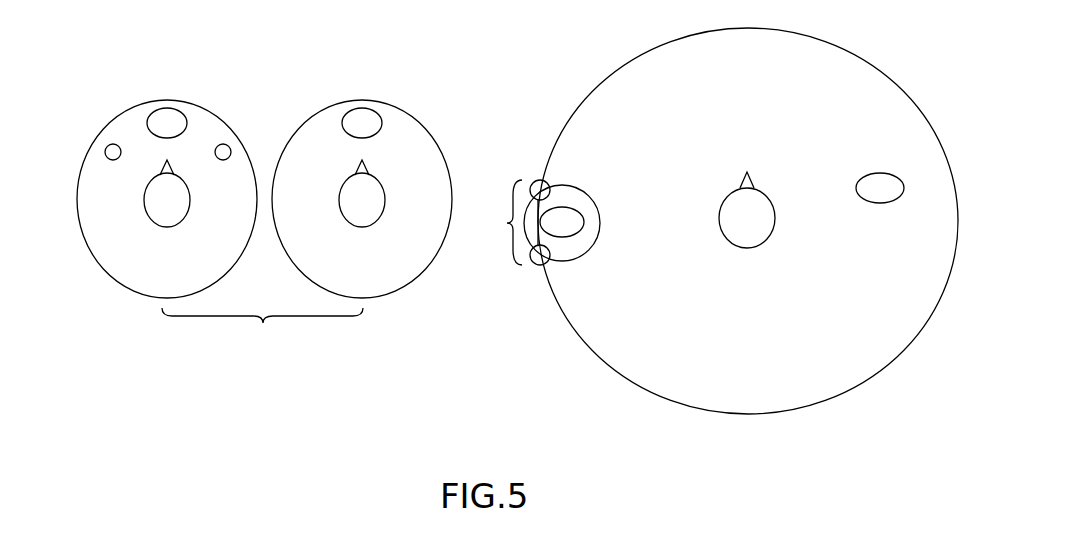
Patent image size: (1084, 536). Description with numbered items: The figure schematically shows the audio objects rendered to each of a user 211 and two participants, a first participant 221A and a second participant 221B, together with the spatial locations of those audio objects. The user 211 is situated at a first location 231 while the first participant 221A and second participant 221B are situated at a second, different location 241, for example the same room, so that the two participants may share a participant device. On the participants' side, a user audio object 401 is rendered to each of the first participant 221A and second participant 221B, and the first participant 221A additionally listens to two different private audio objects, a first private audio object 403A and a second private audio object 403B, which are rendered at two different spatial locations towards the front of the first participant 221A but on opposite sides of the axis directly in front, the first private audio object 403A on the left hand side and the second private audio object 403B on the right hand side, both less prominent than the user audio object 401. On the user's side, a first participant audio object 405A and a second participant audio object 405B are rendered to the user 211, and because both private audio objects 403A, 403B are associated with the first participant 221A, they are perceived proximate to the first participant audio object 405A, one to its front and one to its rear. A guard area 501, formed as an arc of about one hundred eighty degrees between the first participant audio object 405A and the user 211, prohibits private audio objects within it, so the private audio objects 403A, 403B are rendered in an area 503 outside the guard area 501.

The first participant 221A is at (168, 227).
The second participant 221B is at (365, 227).
The first location 231 is at (782, 414).
The second location 241 is at (262, 334).
The user audio object 401 is at (187, 120).
The first private audio object 403A is at (110, 145).
The second private audio object 403B is at (228, 144).
The first participant audio object 405A is at (567, 206).
The second participant audio object 405B is at (877, 203).
The user 211 is at (740, 246).
The guard area 501 is at (600, 227).
The area outside the guard area 503 is at (490, 222).